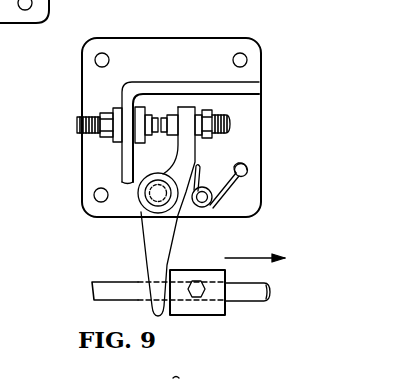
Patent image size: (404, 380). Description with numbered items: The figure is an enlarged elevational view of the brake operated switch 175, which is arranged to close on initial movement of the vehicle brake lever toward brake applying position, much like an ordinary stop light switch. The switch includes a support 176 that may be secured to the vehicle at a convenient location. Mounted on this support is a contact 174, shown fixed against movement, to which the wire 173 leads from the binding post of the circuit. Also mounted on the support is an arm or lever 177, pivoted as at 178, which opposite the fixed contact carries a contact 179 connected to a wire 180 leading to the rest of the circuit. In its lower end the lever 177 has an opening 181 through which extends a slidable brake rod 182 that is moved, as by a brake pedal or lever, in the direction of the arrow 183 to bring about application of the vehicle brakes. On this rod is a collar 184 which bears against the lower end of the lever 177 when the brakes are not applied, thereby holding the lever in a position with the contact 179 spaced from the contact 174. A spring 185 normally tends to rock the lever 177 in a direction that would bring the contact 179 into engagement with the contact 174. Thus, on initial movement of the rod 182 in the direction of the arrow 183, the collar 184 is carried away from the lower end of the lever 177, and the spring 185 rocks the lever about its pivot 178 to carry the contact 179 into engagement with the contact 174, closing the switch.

The wire 173 is at (75, 124).
The contact 174 is at (152, 121).
The brake operated switch 175 is at (226, 6).
The support 176 is at (93, 79).
The arm or lever 177 is at (150, 231).
The pivot 178 is at (163, 199).
The contact 179 is at (165, 115).
The wire 180 is at (232, 126).
The opening 181 is at (140, 280).
The brake rod 182 is at (114, 294).
The arrow 183 is at (252, 258).
The collar 184 is at (200, 313).
The spring 185 is at (213, 200).